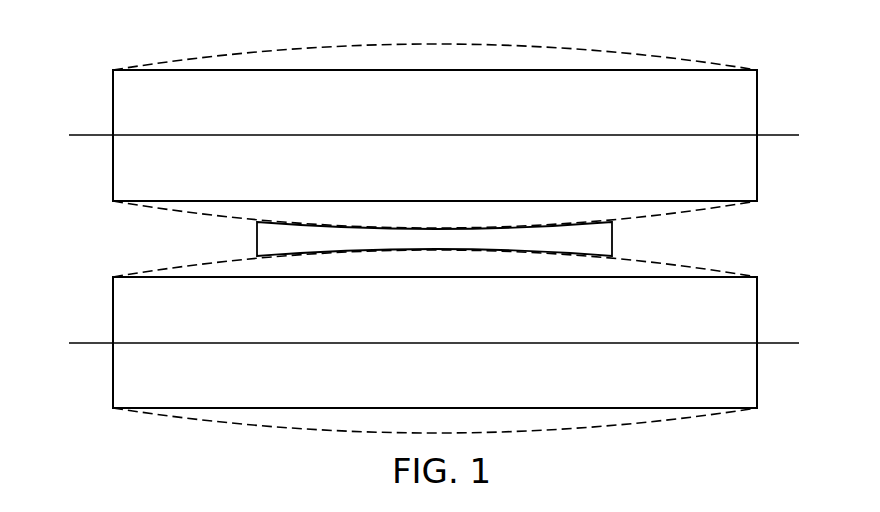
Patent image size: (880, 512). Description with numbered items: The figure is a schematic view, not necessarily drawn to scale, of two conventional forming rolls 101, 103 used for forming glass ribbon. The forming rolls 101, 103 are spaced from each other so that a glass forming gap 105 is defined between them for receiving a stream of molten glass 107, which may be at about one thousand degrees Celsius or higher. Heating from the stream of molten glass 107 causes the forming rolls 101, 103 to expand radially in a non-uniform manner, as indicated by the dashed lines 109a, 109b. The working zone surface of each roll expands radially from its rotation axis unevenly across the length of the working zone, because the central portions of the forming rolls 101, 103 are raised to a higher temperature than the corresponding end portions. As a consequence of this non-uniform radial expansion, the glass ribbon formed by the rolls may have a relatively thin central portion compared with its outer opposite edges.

The forming roll 101 is at (113, 383).
The forming roll 103 is at (757, 88).
The glass forming gap 105 is at (126, 250).
The stream of molten glass 107 is at (612, 238).
The dashed line 109a is at (206, 263).
The dashed line 109b is at (150, 205).